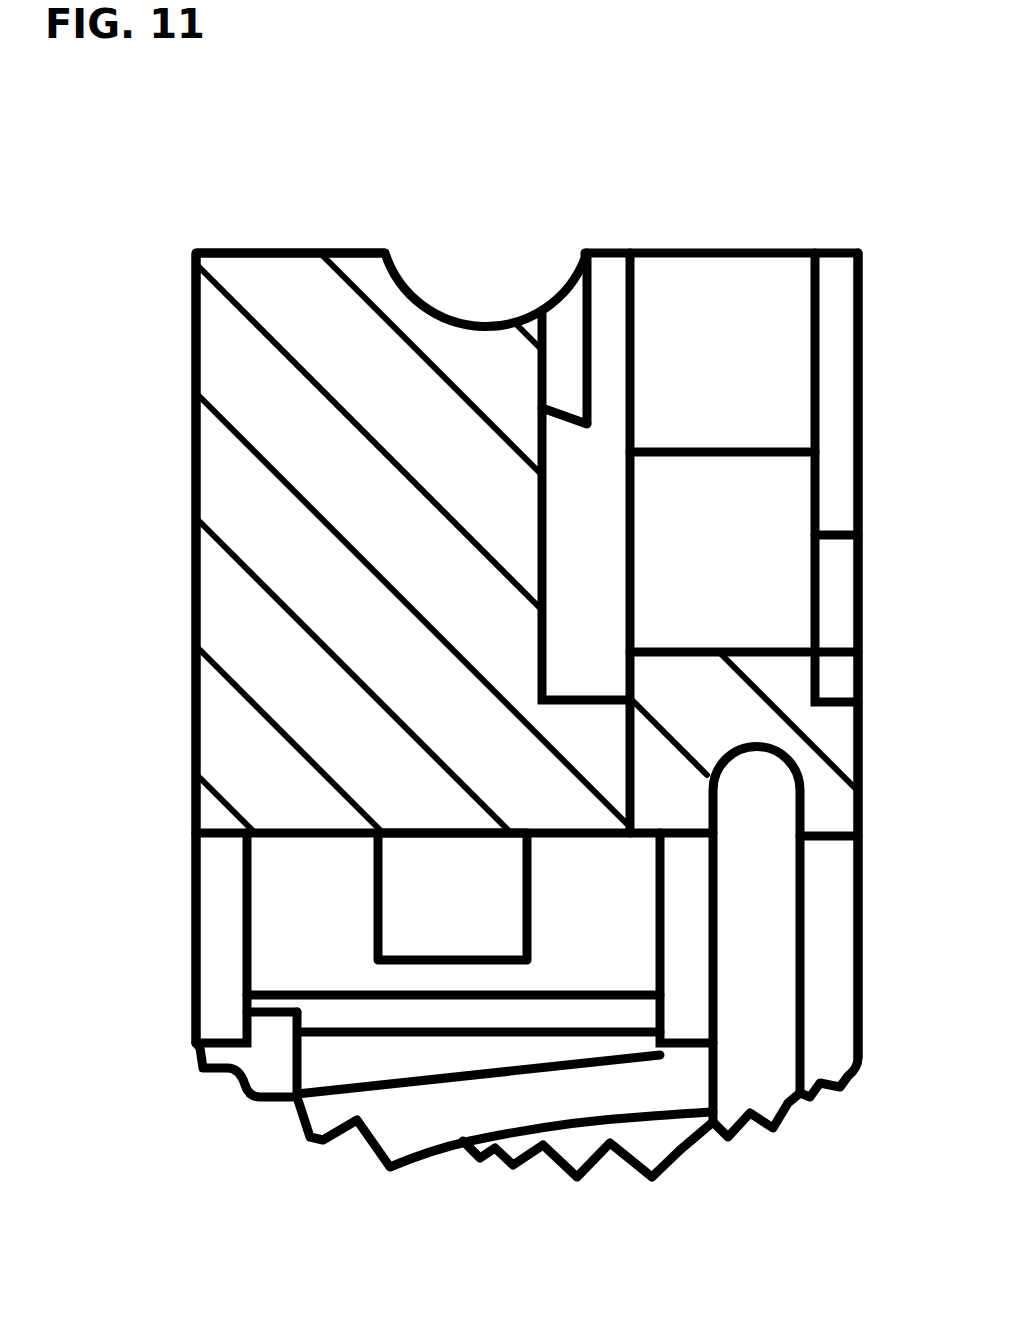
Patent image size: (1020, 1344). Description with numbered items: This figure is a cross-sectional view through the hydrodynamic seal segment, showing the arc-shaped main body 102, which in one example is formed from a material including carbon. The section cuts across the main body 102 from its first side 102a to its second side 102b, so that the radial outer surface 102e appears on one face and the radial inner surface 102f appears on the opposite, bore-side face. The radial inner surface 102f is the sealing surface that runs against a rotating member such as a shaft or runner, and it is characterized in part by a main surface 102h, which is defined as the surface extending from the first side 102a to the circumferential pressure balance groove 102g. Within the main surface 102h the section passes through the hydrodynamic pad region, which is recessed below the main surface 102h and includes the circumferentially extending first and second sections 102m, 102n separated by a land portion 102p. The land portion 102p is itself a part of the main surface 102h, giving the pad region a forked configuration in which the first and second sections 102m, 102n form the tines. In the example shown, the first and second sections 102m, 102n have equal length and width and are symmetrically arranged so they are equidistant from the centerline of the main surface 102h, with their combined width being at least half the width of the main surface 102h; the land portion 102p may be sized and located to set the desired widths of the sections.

The main body 102 is at (210, 592).
The first side 102a is at (862, 430).
The second side 102b is at (194, 472).
The radial outer surface 102e is at (267, 248).
The radial inner surface 102f is at (217, 917).
The pressure balance groove 102g is at (752, 808).
The main surface 102h is at (224, 862).
The first section 102m is at (587, 837).
The second section 102n is at (305, 837).
The land portion 102p is at (460, 837).